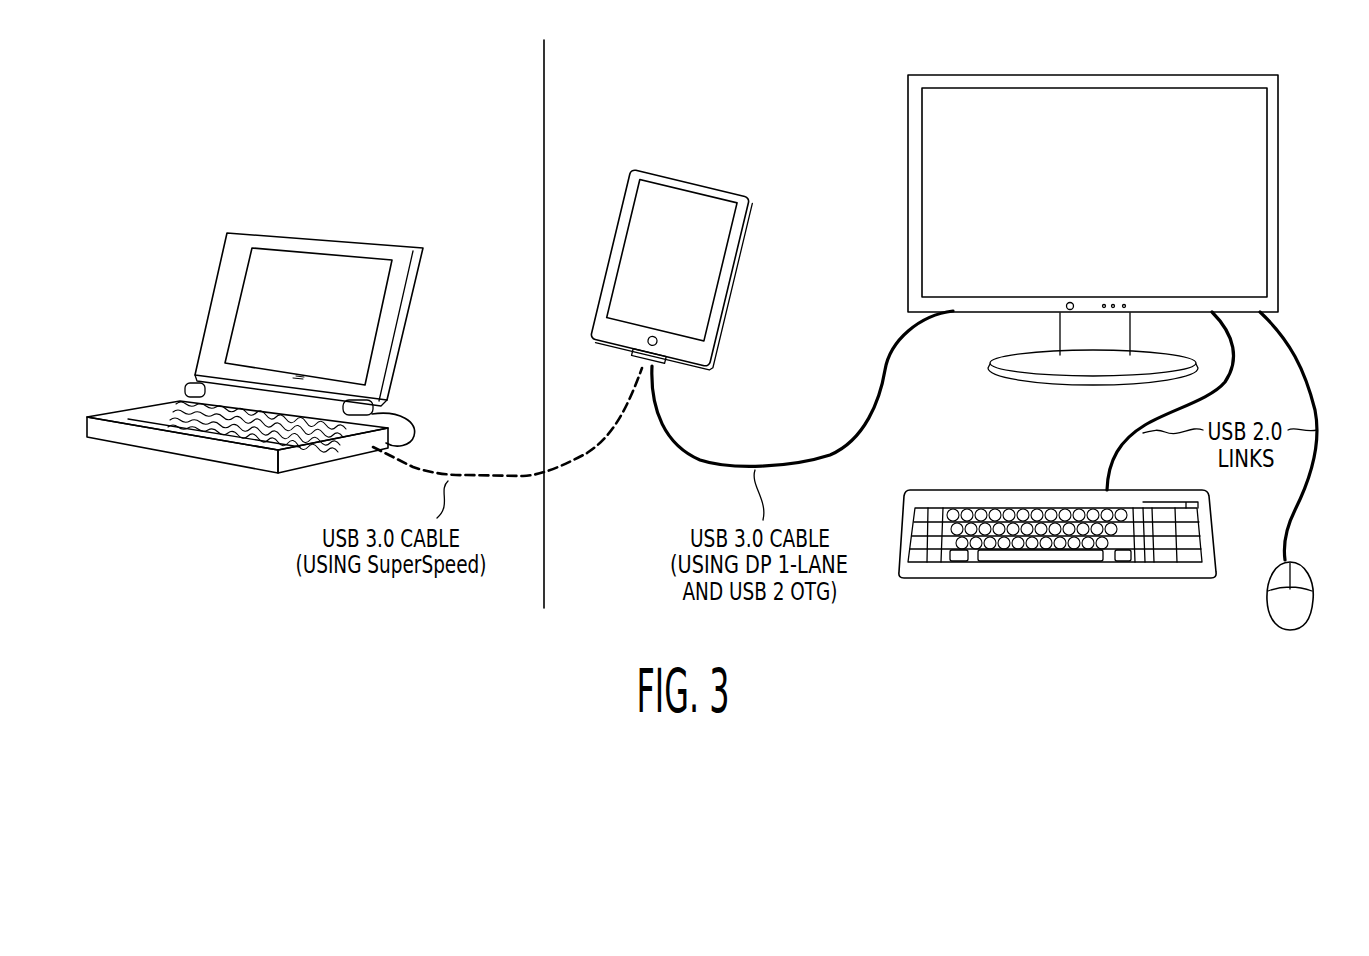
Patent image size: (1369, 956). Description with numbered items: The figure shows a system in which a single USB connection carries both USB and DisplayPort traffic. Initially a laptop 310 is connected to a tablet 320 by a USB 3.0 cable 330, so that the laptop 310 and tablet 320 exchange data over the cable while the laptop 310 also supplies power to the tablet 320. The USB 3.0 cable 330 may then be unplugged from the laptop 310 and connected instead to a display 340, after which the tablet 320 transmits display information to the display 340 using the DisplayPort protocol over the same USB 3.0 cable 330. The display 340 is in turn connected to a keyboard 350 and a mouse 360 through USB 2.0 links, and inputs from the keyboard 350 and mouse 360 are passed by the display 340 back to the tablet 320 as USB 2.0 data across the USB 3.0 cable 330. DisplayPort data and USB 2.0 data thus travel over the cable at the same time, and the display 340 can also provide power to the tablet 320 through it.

The laptop 310 is at (294, 234).
The tablet 320 is at (700, 181).
The USB 3.0 cable 330 is at (820, 457).
The display 340 is at (908, 88).
The keyboard 350 is at (980, 580).
The mouse 360 is at (1285, 632).